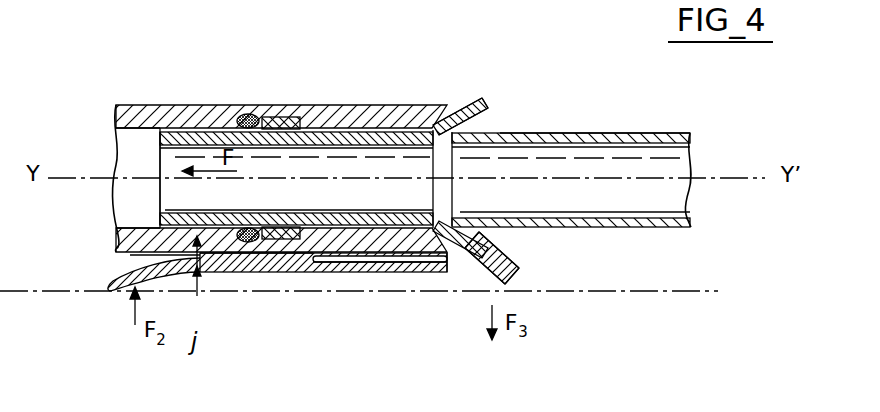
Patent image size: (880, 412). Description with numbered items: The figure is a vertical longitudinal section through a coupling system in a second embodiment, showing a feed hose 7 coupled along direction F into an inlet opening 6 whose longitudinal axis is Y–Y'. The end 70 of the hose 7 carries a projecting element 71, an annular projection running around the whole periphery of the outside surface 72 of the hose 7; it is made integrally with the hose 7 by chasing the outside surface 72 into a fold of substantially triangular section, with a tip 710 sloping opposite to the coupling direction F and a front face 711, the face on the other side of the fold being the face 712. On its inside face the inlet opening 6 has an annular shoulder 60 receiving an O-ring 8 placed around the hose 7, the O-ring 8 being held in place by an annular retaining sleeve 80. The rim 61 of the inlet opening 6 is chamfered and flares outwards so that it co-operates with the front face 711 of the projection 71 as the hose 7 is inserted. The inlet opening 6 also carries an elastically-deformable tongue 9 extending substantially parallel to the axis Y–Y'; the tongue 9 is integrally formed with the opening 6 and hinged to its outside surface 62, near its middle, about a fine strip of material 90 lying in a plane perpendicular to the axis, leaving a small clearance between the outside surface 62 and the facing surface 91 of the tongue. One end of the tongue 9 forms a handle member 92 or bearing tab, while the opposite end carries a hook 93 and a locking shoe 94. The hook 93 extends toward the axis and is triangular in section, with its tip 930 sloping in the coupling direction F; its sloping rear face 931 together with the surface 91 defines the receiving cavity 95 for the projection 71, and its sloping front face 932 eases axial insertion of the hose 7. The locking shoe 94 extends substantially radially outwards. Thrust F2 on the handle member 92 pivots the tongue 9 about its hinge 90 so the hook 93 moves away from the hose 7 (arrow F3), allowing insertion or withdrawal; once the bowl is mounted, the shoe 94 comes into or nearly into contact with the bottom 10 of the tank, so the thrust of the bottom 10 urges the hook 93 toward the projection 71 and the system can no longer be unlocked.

The inlet opening 6 is at (113, 110).
The end of the hose 70 is at (188, 118).
The annular shoulder 60 is at (233, 122).
The O-ring 8 is at (248, 121).
The annular retaining sleeve 80 is at (375, 135).
The feed hose 7 is at (645, 136).
The outside surface of the hose 72 is at (585, 132).
The projecting element 71 is at (477, 104).
The tip of the projection 710 is at (489, 103).
The front face of the projection 711 is at (443, 104).
The outer face of flare 712 is at (482, 126).
The outside surface of the opening 62 is at (126, 257).
The handle member 92 is at (108, 294).
The elastically-deformable tongue 9 is at (240, 273).
The strip of material forming a hinge 90 is at (296, 273).
The rim of the inlet opening 61 is at (312, 262).
The facing surface of the tongue 91 is at (425, 266).
The receiving cavity 95 is at (466, 276).
The hook 93 is at (518, 272).
The tip of the hook 930 is at (505, 240).
The sloping front face of the hook 932 is at (515, 262).
The sloping rear face of the hook 931 is at (475, 288).
The locking shoe 94 is at (492, 288).
The bottom of the tank 10 is at (705, 292).